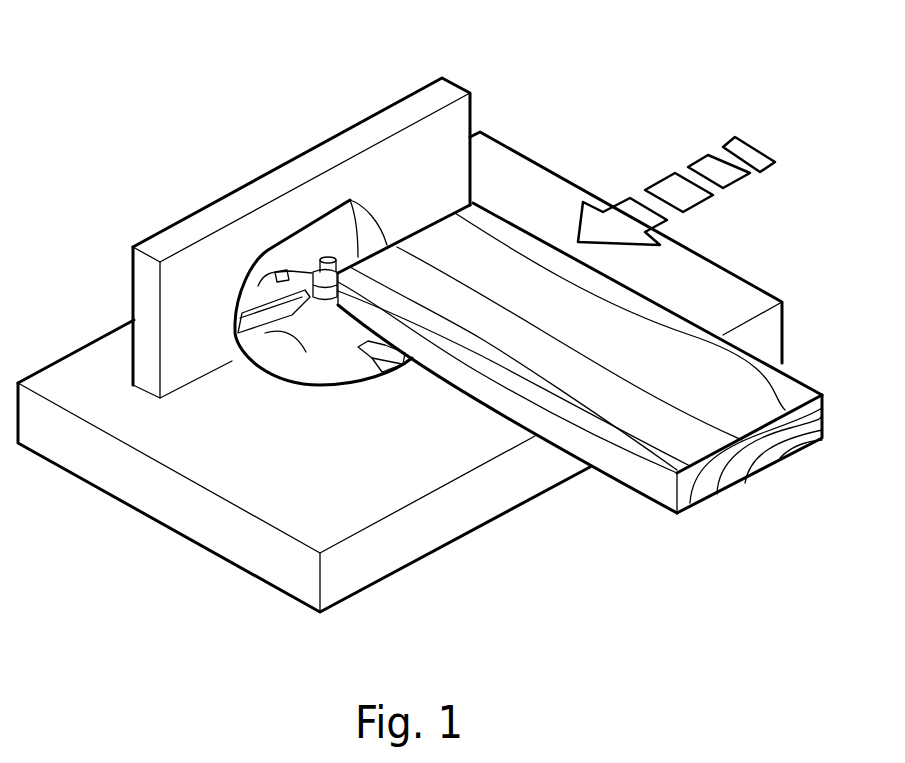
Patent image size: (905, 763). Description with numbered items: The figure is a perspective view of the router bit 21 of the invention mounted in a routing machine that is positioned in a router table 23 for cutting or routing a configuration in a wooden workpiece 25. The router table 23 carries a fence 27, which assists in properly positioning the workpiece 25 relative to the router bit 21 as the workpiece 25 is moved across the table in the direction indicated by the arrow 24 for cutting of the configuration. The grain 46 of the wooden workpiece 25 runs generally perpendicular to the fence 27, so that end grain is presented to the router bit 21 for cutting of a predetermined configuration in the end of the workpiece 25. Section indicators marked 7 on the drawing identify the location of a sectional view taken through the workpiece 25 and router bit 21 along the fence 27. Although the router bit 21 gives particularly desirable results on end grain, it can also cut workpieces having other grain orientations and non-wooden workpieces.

The section line 7- 7 is at (300, 110).
The router bit 21 is at (262, 335).
The router table 23 is at (387, 497).
The arrow 24 is at (677, 187).
The wooden workpiece 25 is at (505, 255).
The fence 27 is at (203, 223).
The grain 46 is at (707, 400).